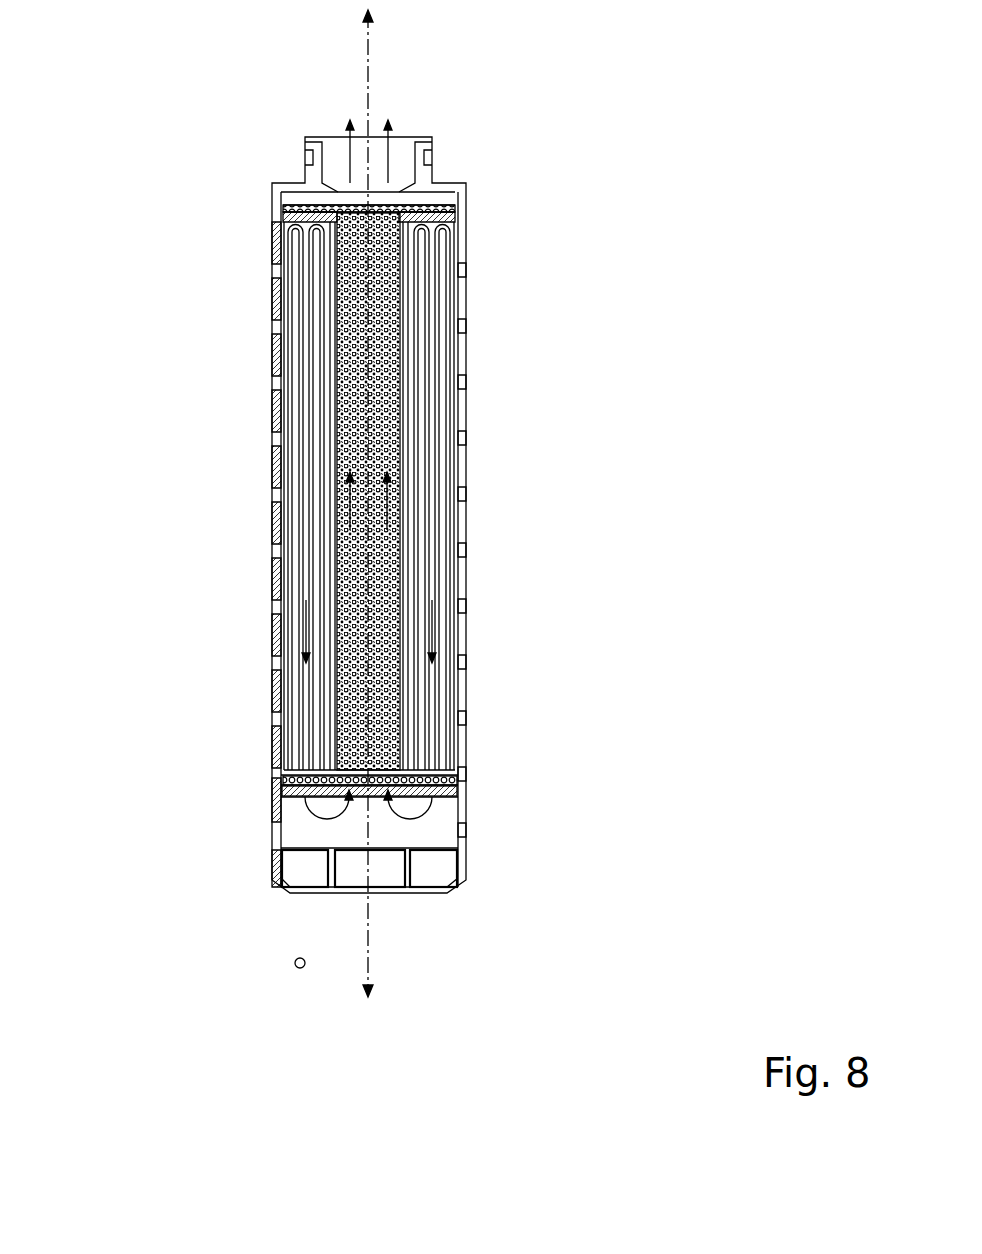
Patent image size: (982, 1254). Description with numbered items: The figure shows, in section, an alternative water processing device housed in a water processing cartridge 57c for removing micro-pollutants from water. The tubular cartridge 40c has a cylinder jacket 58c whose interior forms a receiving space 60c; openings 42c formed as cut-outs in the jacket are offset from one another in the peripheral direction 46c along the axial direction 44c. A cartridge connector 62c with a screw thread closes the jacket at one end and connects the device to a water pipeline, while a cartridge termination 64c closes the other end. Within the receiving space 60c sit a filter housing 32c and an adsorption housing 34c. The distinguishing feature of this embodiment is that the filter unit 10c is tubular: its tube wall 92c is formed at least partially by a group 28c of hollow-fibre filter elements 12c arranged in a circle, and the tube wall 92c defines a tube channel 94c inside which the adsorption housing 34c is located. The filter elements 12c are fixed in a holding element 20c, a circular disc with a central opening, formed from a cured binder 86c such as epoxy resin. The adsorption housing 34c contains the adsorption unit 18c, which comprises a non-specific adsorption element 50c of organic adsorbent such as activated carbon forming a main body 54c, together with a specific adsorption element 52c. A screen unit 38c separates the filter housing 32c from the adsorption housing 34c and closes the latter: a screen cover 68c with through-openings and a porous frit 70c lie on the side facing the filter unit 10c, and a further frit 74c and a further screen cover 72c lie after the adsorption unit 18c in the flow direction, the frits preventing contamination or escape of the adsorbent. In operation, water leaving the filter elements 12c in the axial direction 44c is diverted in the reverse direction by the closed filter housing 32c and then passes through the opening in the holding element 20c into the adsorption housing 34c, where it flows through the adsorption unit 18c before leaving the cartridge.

The filter unit 10c is at (301, 537).
The filter elements 12c is at (300, 675).
The adsorption unit 18c is at (405, 303).
The holding element 20c is at (313, 780).
The group of filter elements 28c is at (302, 697).
The filter housing 32c is at (301, 815).
The adsorption housing 34c is at (461, 267).
The screen unit 38c is at (188, 297).
The cartridge 40c is at (510, 463).
The openings 42c is at (472, 604).
The axial direction 44c is at (372, 910).
The peripheral direction 46c is at (295, 964).
The non-specific adsorption element 50c is at (348, 222).
The specific adsorption element 52c is at (340, 256).
The main body 54c is at (430, 328).
The water processing cartridge 57c is at (540, 98).
The cylinder jacket 58c is at (462, 508).
The receiving space 60c is at (308, 857).
The cartridge connector 62c is at (468, 188).
The cartridge termination 64c is at (440, 890).
The screen cover 68c is at (460, 786).
The frit 70c is at (440, 793).
The further screen cover 72c is at (461, 208).
The further frit 74c is at (453, 227).
The binder 86c is at (445, 435).
The tube wall 92c is at (430, 572).
The tube channel 94c is at (373, 640).